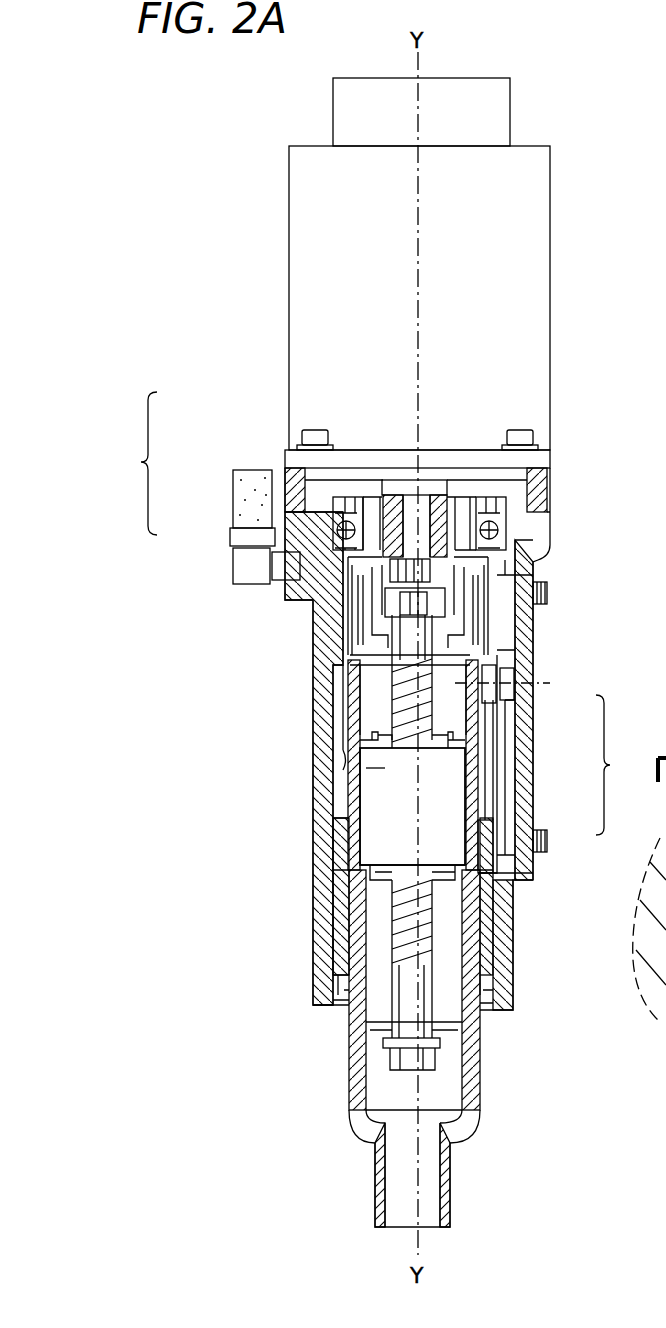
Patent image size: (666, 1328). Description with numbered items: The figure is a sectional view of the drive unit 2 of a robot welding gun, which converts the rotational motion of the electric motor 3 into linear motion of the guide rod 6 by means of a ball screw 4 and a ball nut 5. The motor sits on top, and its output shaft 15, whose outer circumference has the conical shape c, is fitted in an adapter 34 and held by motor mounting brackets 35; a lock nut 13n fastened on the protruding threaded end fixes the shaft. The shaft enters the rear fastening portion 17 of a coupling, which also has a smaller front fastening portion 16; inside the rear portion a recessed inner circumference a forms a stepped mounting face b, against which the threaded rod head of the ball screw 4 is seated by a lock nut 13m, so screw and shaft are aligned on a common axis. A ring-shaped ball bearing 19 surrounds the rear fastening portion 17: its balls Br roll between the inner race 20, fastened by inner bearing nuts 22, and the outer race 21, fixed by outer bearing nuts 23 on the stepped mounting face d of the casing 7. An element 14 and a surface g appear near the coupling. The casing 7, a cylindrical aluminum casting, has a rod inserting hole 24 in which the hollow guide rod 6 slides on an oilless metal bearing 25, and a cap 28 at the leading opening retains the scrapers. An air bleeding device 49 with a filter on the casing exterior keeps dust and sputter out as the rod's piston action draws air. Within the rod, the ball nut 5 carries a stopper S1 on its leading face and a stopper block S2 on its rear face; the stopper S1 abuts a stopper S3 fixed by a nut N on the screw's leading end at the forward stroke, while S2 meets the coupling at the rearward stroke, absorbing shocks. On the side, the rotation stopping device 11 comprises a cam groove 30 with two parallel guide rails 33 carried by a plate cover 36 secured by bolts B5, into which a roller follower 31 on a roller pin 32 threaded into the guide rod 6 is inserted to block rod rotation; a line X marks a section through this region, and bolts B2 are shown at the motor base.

The drive unit 2 is at (263, 278).
The electric motor 3 is at (546, 262).
The bolt B2 is at (520, 436).
The output shaft 15 is at (450, 488).
The motor mounting brackets 35 is at (525, 495).
The adapter 34 is at (492, 512).
The balls Br is at (337, 530).
The rear fastening portion 17 is at (448, 552).
The lock nut 13n is at (533, 578).
The bolts B5 is at (548, 594).
The front fastening portion 16 is at (538, 628).
The lock nut 13m is at (522, 655).
The roller follower 31 is at (492, 722).
The roller pin 32 is at (505, 740).
The guide rails 33 is at (515, 762).
The plate cover 36 is at (520, 793).
The cam groove 30 is at (505, 822).
The rotation stopping device 11 is at (617, 765).
The casing 7 is at (322, 992).
The cap 28 is at (500, 1008).
The guide rod 6 is at (352, 700).
The inner bearing nuts 22 is at (353, 500).
The outer bearing nuts 23 is at (360, 512).
The inner race 20 is at (340, 525).
The outer race 21 is at (352, 546).
The ball bearing 19 is at (131, 463).
The air bleeding device 49 is at (233, 540).
The stepped mounting face d is at (233, 569).
The conical outer circumference c is at (328, 582).
The gap g is at (345, 598).
The inner circumference a is at (352, 618).
The stepped mounting face b is at (395, 604).
The coupling 14 is at (375, 640).
The ball screw 4 is at (395, 690).
The stopper block S2 is at (364, 780).
The ball nut 5 is at (362, 790).
The rod inserting hole 24 is at (345, 800).
The stopper S1 is at (333, 870).
The oilless metal bearing 25 is at (340, 960).
The stopper S3 is at (393, 1058).
The nut N is at (395, 1050).
The section line X- X is at (498, 684).